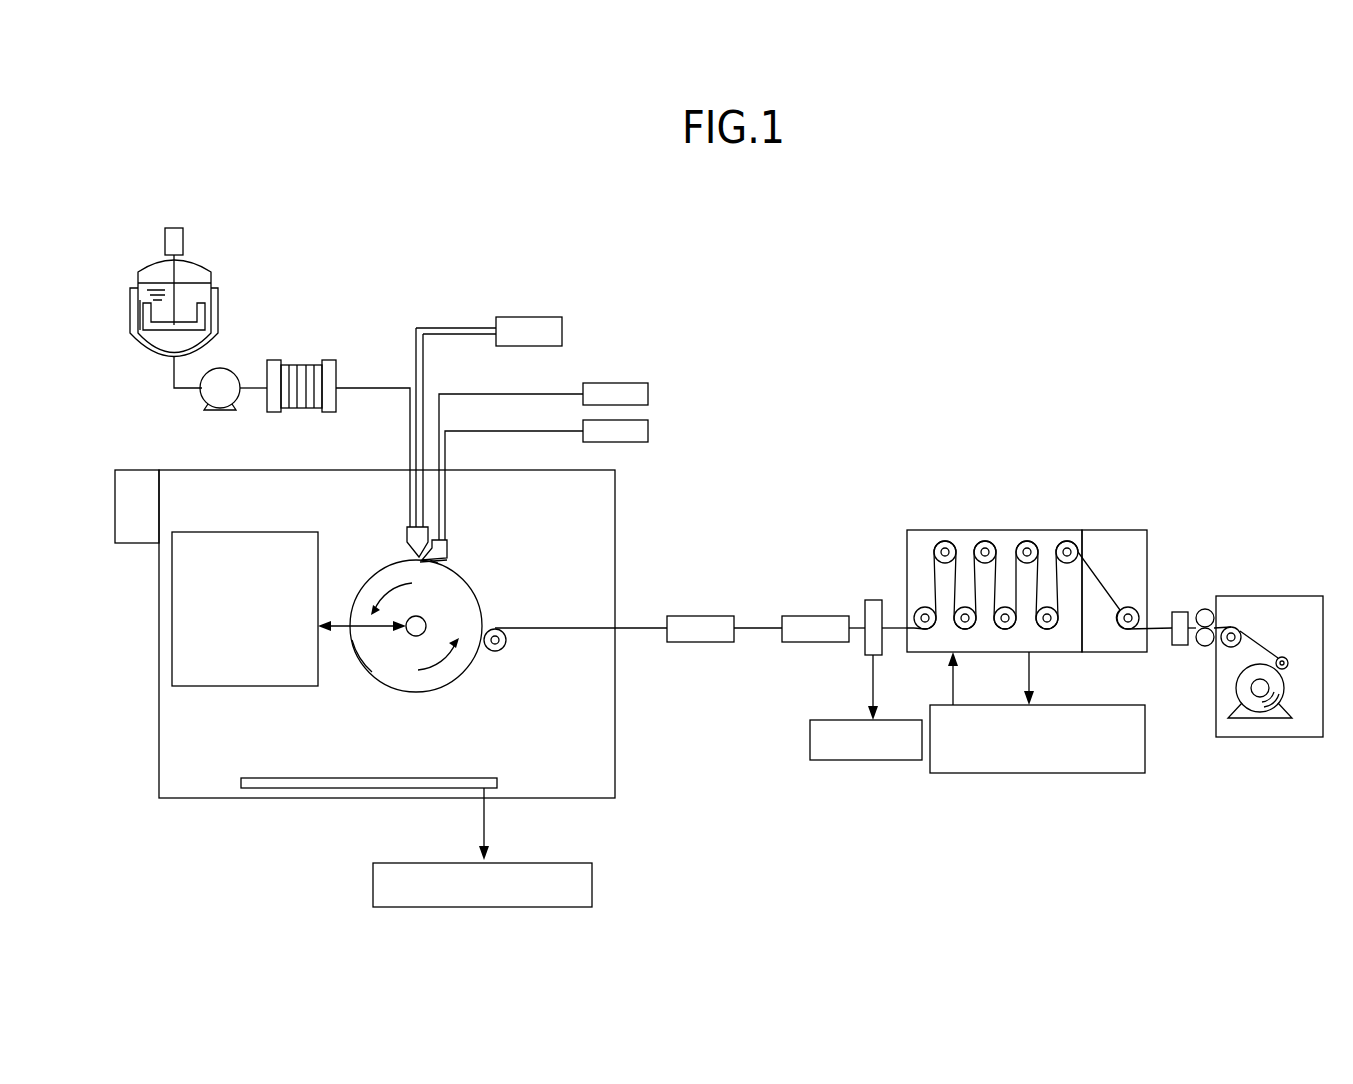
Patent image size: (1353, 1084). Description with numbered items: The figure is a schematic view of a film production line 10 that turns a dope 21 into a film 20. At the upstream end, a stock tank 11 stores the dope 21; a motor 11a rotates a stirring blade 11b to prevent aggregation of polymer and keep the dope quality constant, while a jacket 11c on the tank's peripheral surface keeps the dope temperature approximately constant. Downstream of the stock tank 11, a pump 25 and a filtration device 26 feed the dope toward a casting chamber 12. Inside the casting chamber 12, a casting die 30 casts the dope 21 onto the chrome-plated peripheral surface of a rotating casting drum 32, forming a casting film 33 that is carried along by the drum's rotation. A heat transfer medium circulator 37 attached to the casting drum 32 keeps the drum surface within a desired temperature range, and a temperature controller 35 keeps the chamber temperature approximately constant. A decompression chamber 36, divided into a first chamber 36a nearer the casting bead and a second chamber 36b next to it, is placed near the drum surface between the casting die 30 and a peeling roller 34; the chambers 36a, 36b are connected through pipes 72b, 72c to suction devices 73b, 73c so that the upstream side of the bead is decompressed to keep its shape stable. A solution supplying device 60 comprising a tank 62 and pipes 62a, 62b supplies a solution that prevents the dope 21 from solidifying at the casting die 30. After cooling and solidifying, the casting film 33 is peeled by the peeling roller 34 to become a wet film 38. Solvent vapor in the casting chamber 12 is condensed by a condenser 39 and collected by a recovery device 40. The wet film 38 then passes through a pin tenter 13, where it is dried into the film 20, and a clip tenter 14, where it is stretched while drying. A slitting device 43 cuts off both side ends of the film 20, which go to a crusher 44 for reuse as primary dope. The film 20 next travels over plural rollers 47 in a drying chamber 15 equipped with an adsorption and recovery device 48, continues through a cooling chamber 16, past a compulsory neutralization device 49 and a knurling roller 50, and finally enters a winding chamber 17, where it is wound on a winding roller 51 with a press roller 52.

The film production line 10 is at (1040, 256).
The stock tank 11 is at (217, 276).
The motor 11a is at (172, 228).
The stirring blade 11b is at (205, 312).
The jacket 11c is at (152, 353).
The dope 21 is at (193, 338).
The pump 25 is at (215, 393).
The filtration device 26 is at (298, 412).
The solution supplying device 60 is at (521, 310).
The tank 62 is at (527, 325).
The pipe 62a is at (463, 326).
The pipe 62b is at (437, 340).
The pipe 72b is at (513, 394).
The pipe 72c is at (446, 448).
The suction device 73b is at (632, 393).
The suction device 73c is at (632, 432).
The casting chamber 12 is at (150, 788).
The temperature controller 35 is at (115, 505).
The heat transfer medium circulator 37 is at (233, 532).
The casting die 30 is at (405, 535).
The decompression chamber 36 is at (468, 548).
The first chamber 36a is at (437, 563).
The second chamber 36b is at (452, 558).
The casting drum 32 is at (415, 665).
The casting film 33 is at (373, 681).
The peeling roller 34 is at (497, 652).
The wet film 38 is at (622, 630).
The condenser 39 is at (358, 789).
The recovery device 40 is at (592, 880).
The pin tenter 13 is at (700, 643).
The clip tenter 14 is at (817, 643).
The film 20 is at (858, 626).
The slitting device 43 is at (873, 612).
The crusher 44 is at (865, 761).
The drying chamber 15 is at (1039, 554).
The rollers 47 is at (1026, 545).
The cooling chamber 16 is at (1110, 530).
The adsorption and recovery device 48 is at (1017, 774).
The compulsory neutralization device 49 is at (1177, 612).
The knurling roller 50 is at (1206, 609).
The winding chamber 17 is at (1245, 636).
The winding roller 51 is at (1255, 690).
The press roller 52 is at (1284, 657).